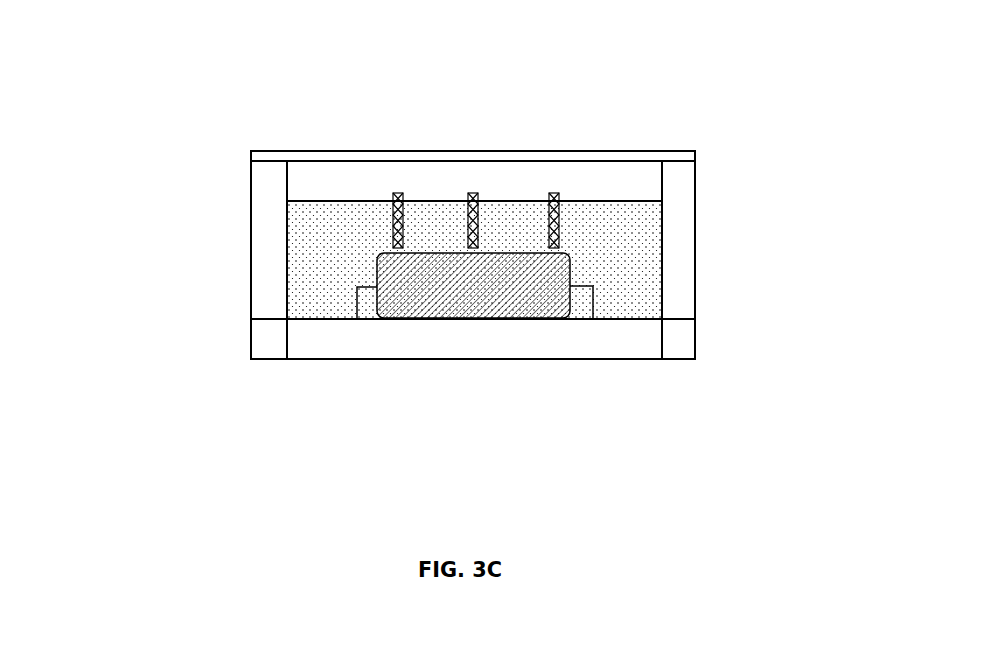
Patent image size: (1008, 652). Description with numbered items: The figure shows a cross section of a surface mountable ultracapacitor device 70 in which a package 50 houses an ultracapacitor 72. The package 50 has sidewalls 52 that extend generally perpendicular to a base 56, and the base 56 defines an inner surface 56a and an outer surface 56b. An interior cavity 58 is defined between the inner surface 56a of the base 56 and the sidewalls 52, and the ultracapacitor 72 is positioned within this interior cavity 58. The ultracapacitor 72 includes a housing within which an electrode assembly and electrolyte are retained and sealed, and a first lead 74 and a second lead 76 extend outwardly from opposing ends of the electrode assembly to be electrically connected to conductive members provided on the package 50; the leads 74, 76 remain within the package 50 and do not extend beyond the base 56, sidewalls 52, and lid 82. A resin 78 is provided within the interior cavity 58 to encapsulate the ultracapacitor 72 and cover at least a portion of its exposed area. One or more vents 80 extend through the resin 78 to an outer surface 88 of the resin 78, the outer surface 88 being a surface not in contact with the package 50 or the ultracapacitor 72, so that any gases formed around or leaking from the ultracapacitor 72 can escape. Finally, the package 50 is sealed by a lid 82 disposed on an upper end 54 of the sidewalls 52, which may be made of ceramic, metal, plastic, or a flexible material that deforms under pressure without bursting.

The device 70 is at (464, 241).
The package 50 is at (252, 183).
The sidewalls 52 is at (265, 247).
The upper end 54 is at (665, 162).
The base 56 is at (457, 343).
The inner surface 56a is at (647, 320).
The outer surface 56b is at (392, 359).
The interior cavity 58 is at (618, 177).
The ultracapacitor 72 is at (520, 297).
The first lead 74 is at (358, 312).
The second lead 76 is at (592, 290).
The resin 78 is at (337, 230).
The vents 80 is at (553, 197).
The lid 82 is at (350, 155).
The outer surface 88 is at (597, 198).